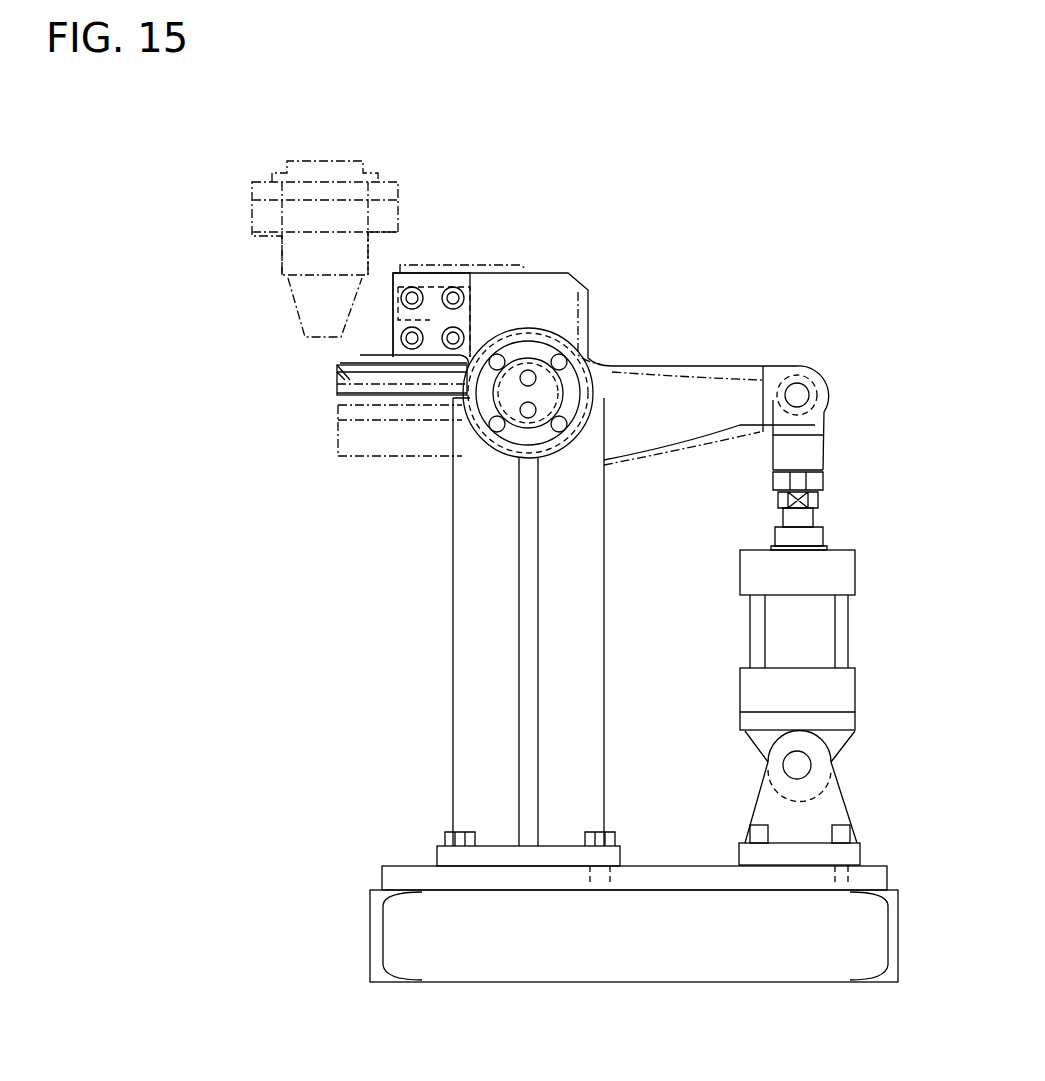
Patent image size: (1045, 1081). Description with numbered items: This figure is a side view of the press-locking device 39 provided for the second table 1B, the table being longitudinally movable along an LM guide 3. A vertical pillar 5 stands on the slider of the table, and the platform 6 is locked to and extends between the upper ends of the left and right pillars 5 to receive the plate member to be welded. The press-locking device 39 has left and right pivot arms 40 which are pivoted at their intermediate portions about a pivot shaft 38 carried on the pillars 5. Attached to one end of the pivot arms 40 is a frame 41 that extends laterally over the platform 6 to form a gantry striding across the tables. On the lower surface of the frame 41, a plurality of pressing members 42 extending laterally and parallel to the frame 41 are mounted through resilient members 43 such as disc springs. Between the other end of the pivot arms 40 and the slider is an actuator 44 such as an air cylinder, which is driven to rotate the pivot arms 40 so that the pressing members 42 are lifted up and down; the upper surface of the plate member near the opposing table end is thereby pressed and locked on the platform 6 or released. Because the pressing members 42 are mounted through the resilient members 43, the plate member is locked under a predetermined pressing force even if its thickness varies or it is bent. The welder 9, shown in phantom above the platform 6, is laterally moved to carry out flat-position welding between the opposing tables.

The second table 1B is at (688, 192).
The welder 9 is at (252, 222).
The press-locking device 39 is at (538, 213).
The frame 41 is at (416, 272).
The pivot shaft 38 is at (538, 387).
The pivot arm 40 is at (668, 365).
The resilient member 43 is at (405, 362).
The pressing member 42 is at (336, 380).
The platform 6 is at (340, 407).
The pillar 5 is at (453, 622).
The actuator 44 is at (850, 628).
The LM guide 3 is at (398, 880).